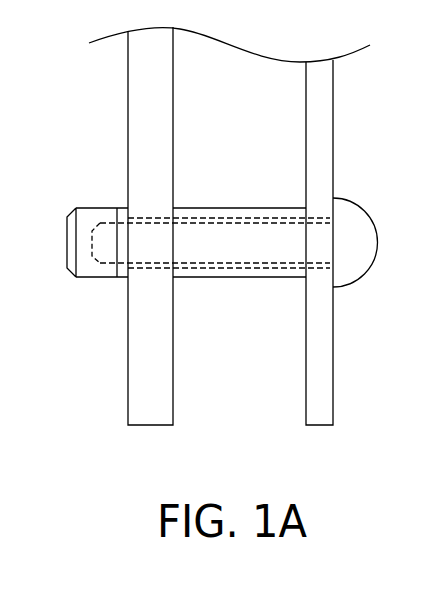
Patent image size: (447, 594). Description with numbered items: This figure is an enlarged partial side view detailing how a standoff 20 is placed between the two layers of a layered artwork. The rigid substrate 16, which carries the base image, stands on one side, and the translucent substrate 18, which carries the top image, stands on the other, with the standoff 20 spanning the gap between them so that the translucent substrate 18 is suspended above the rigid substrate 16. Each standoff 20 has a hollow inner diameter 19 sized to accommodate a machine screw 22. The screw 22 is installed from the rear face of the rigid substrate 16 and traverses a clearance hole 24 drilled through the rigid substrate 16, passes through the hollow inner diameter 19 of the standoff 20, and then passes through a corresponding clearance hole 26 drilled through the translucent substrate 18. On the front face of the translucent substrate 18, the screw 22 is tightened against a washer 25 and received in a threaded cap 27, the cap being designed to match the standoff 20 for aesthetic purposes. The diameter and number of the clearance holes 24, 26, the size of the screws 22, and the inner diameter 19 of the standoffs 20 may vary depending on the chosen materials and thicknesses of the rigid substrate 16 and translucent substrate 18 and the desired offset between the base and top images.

The rigid substrate 16 is at (317, 87).
The translucent substrate 18 is at (143, 62).
The hollow inner diameter 19 is at (246, 222).
The standoff 20 is at (203, 212).
The machine screw 22 is at (249, 245).
The clearance hole 24 is at (313, 216).
The washer 25 is at (123, 210).
The clearance hole 26 is at (157, 217).
The threaded cap 27 is at (85, 270).